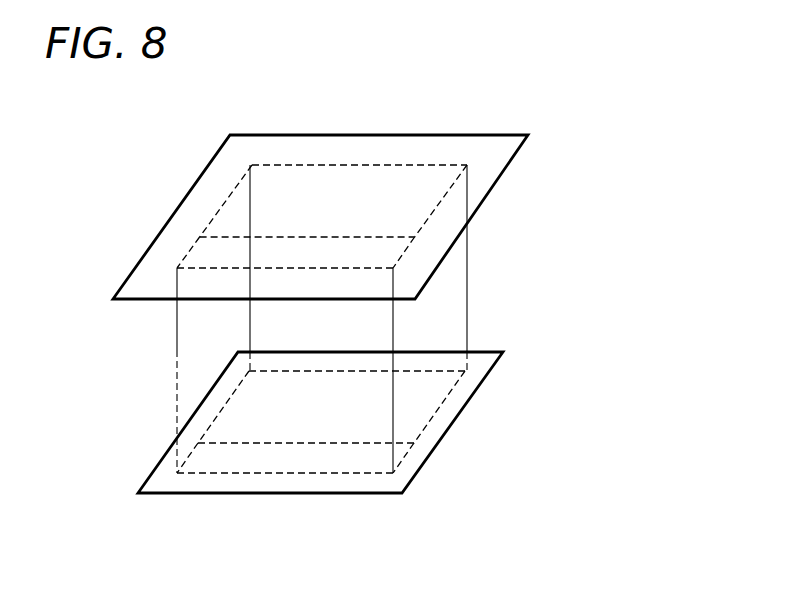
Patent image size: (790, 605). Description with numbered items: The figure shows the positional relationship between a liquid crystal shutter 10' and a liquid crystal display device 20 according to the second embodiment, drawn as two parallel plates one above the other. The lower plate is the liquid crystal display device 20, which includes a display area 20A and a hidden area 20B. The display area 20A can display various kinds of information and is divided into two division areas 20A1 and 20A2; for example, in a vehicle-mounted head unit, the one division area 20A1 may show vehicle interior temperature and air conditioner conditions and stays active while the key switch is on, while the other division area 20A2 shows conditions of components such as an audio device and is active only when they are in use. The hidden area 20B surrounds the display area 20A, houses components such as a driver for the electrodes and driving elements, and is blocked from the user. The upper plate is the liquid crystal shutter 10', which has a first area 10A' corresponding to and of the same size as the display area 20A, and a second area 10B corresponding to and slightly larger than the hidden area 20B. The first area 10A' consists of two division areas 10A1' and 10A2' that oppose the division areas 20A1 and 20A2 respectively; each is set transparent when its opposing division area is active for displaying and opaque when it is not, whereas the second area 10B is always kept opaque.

The liquid crystal shutter 10' is at (409, 185).
The first area 10A' is at (441, 182).
The division area 10A1' is at (409, 258).
The division area 10A2' is at (453, 185).
The second area 10B is at (487, 177).
The liquid crystal display device 20 is at (400, 446).
The display area 20A is at (419, 480).
The division area 20A1 is at (368, 468).
The division area 20A2 is at (413, 423).
The hidden area 20B is at (437, 450).